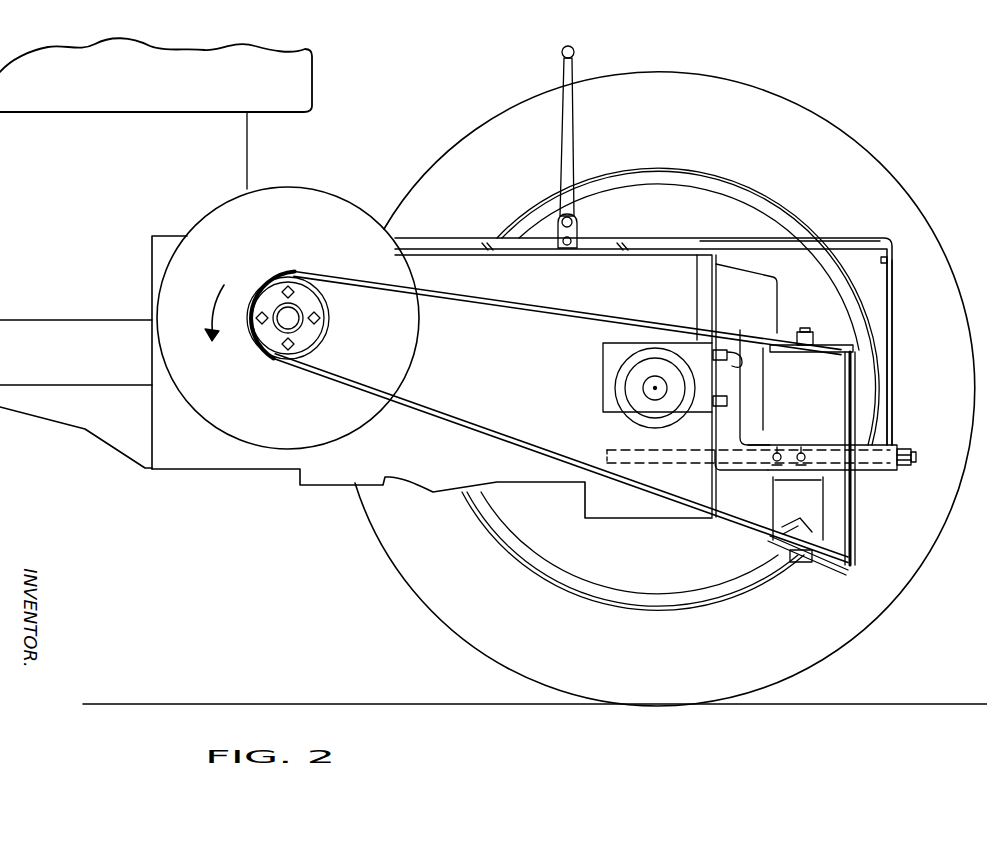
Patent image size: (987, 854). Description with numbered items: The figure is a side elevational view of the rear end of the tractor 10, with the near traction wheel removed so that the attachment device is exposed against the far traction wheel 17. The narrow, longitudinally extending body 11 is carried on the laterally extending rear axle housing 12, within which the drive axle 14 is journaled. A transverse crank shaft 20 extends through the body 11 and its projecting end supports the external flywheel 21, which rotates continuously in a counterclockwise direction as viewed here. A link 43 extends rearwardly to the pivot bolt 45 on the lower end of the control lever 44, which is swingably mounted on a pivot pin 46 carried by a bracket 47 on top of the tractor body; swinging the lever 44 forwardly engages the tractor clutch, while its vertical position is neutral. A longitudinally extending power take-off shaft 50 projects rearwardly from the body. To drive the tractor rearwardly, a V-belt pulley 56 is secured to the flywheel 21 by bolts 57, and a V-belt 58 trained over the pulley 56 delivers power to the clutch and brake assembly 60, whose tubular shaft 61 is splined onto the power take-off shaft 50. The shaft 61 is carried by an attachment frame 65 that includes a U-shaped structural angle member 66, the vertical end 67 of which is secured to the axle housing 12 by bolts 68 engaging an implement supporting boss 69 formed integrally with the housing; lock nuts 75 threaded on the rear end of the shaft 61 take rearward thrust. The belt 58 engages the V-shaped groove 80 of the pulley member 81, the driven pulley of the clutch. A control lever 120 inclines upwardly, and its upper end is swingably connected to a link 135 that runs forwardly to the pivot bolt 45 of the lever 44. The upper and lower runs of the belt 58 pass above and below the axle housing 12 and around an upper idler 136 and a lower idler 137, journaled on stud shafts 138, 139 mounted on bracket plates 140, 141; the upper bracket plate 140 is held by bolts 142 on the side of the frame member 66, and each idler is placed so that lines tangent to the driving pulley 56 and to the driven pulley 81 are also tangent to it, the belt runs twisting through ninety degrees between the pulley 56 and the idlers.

The tractor 10 is at (122, 488).
The body 11 is at (70, 357).
The rear axle housing 12 is at (617, 345).
The drive axle 14 is at (657, 393).
The traction wheel 17 is at (913, 557).
The crank shaft 20 is at (281, 305).
The flywheel 21 is at (313, 192).
The link 43 is at (450, 238).
The control lever 44 is at (573, 131).
The pivot bolt 45 is at (567, 250).
The pivot pin 46 is at (558, 215).
The bracket 47 is at (578, 232).
The power take-off shaft 50 is at (690, 464).
The V-belt pulley 56 is at (302, 287).
The bolts 57 is at (294, 346).
The V-belt 58 is at (513, 319).
The clutch and brake assembly 60 is at (868, 424).
The tubular shaft 61 is at (913, 458).
The attachment frame 65 is at (746, 484).
The structural angle member 66 is at (880, 470).
The end 67 is at (736, 357).
The bolts 68 is at (737, 360).
The implement supporting boss 69 is at (696, 352).
The lock nuts 75 is at (900, 448).
The V-shaped groove 80 is at (856, 372).
The pulley member 81 is at (856, 386).
The control lever 120 is at (893, 303).
The link 135 is at (745, 246).
The upper idler 136 is at (832, 345).
The lower idler 137 is at (828, 577).
The stud shaft 138 is at (803, 328).
The stud shaft 139 is at (797, 566).
The upper bracket plate 140 is at (741, 456).
The bracket plate 141 is at (852, 512).
The bolts 142 is at (800, 452).